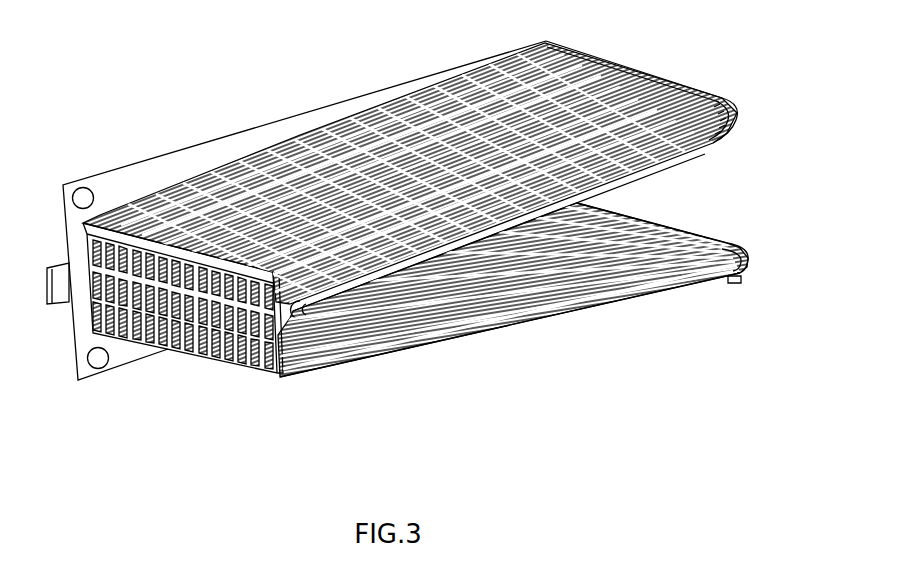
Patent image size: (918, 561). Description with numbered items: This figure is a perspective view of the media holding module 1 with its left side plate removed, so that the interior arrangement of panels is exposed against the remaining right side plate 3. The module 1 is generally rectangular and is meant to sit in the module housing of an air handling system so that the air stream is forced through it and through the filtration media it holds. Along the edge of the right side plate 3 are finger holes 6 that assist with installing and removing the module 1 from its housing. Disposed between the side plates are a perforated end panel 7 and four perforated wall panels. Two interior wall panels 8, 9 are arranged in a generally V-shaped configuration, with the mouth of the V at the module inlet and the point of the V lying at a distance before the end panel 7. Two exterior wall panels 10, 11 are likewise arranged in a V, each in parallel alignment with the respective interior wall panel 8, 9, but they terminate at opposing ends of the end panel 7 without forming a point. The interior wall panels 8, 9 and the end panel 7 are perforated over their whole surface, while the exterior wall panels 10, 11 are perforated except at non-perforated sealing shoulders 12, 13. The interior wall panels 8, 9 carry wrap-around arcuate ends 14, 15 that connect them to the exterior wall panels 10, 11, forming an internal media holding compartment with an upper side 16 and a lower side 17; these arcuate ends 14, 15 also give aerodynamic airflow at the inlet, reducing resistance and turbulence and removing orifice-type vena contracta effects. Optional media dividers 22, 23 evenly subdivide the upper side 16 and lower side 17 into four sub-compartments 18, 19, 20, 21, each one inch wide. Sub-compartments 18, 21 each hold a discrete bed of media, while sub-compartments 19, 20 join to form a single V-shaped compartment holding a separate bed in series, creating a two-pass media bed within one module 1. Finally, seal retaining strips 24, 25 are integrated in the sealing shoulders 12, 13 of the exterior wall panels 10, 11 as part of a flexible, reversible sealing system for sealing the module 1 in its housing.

The media holding module 1 is at (430, 268).
The right side plate 3 is at (180, 163).
The finger holes 6 is at (78, 192).
The perforated end panel 7 is at (180, 352).
The interior wall panel 8 is at (597, 180).
The interior wall panel 9 is at (542, 270).
The exterior wall panel 10 is at (383, 172).
The exterior wall panel 11 is at (623, 310).
The sealing shoulder 12 is at (729, 100).
The sealing shoulder 13 is at (744, 272).
The wrap-around arcuate end 14 is at (714, 142).
The wrap-around arcuate end 15 is at (731, 245).
The upper side 16 is at (753, 50).
The lower side 17 is at (760, 213).
The sub-compartment 18 is at (300, 318).
The sub-compartment 19 is at (310, 312).
The sub-compartment 20 is at (349, 328).
The sub-compartment 21 is at (380, 347).
The media divider 22 is at (345, 250).
The media divider 23 is at (488, 308).
The seal retaining strip 24 is at (717, 100).
The seal retaining strip 25 is at (735, 283).